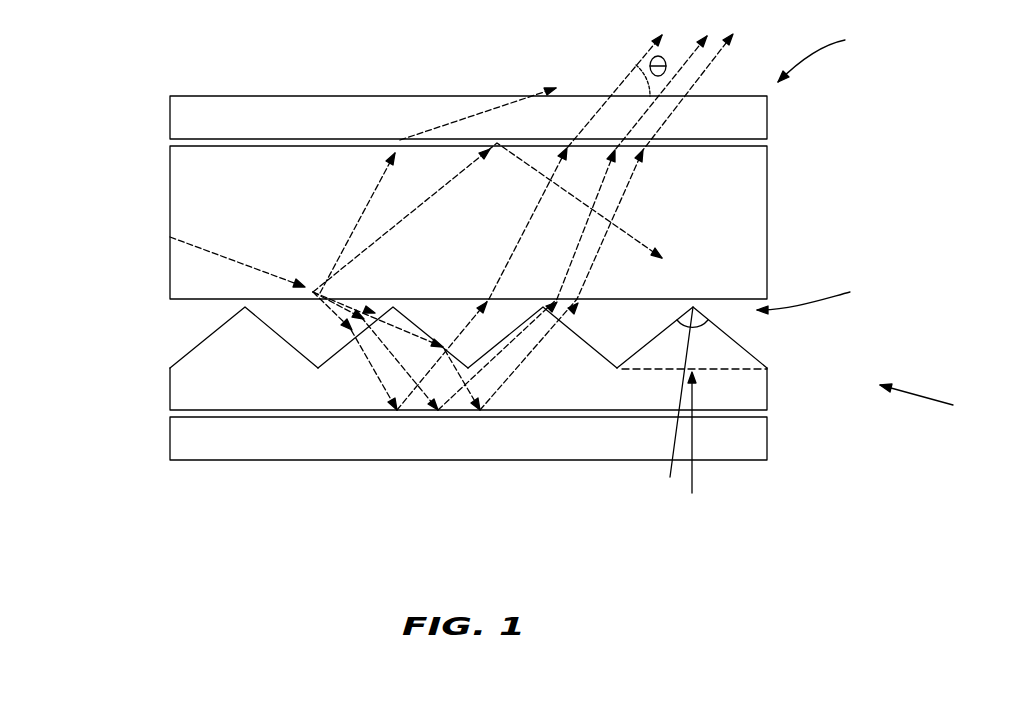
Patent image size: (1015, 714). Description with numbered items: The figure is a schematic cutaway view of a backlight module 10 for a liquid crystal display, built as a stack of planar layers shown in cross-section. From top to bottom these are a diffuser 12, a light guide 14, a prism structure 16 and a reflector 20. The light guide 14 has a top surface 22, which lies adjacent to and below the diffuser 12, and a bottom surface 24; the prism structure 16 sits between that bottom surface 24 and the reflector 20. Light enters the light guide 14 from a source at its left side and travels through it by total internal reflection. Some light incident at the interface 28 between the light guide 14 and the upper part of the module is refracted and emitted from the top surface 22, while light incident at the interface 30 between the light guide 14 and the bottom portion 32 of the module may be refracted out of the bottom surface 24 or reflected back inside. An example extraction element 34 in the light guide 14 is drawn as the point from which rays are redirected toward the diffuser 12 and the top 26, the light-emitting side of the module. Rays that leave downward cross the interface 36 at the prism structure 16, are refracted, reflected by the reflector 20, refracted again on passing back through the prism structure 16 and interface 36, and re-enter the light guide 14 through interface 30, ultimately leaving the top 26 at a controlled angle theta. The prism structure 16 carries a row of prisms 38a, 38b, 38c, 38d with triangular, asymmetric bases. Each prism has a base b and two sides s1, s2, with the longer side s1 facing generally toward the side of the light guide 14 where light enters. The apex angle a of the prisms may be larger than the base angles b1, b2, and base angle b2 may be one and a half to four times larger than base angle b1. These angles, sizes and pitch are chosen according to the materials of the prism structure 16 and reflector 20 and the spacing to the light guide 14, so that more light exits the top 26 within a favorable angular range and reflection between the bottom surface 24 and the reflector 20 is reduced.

The backlight module 10 is at (675, 600).
The diffuser 12 is at (170, 110).
The light guide 14 is at (170, 199).
The prism structure 16 is at (508, 370).
The reflector 20 is at (170, 443).
The top surface 22 is at (193, 143).
The bottom surface 24 is at (170, 300).
The top 26 is at (827, 56).
The interface 28 is at (762, 143).
The interface 30 is at (820, 294).
The bottom portion 32 is at (933, 405).
The extraction element 34 is at (313, 292).
The interface 36 is at (345, 348).
The prism 38a is at (222, 347).
The prism 38b is at (377, 343).
The prism 38c is at (550, 353).
The prism 38d is at (713, 338).
The longer side s1 is at (670, 323).
The side s2 is at (760, 360).
The apex angle a is at (675, 408).
The base b is at (694, 449).
The base angle b1 is at (643, 350).
The base angle b2 is at (740, 357).